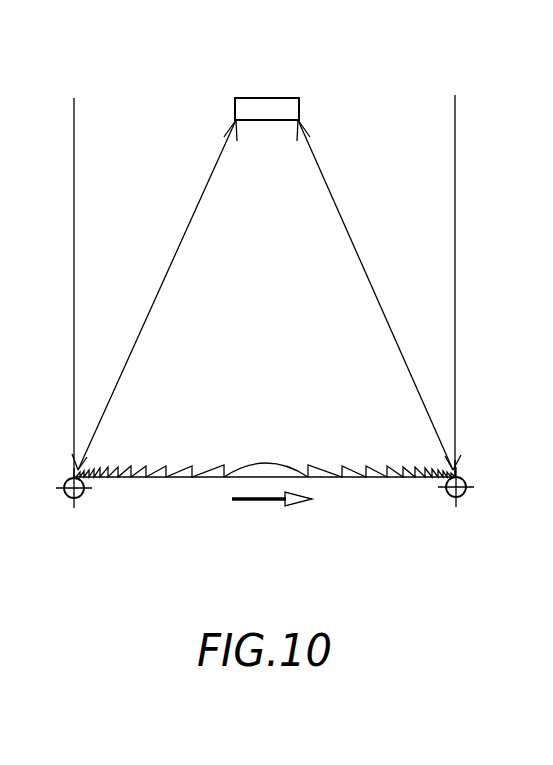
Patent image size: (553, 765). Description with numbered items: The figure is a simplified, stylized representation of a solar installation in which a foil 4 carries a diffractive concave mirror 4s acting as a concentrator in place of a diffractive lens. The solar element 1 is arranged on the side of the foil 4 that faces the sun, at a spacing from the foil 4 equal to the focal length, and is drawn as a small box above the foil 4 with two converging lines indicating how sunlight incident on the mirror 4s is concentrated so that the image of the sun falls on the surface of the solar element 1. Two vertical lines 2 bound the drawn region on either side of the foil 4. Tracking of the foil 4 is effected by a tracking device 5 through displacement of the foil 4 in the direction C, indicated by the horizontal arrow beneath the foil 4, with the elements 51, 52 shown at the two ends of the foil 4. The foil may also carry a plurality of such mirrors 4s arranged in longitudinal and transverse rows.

The solar element 1 is at (277, 108).
The reference lines 2 is at (74, 180).
The foil 4 is at (185, 482).
The diffractive concave mirror 4s is at (348, 479).
The tracking device 5 is at (464, 473).
The left pivot 51 is at (70, 495).
The right pivot 52 is at (462, 494).
The direction C is at (267, 501).